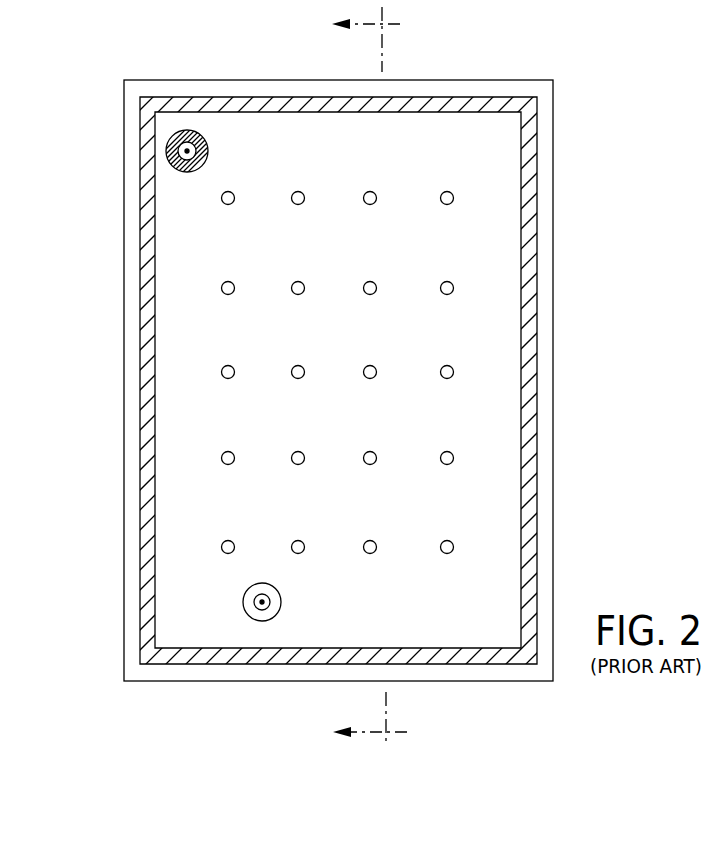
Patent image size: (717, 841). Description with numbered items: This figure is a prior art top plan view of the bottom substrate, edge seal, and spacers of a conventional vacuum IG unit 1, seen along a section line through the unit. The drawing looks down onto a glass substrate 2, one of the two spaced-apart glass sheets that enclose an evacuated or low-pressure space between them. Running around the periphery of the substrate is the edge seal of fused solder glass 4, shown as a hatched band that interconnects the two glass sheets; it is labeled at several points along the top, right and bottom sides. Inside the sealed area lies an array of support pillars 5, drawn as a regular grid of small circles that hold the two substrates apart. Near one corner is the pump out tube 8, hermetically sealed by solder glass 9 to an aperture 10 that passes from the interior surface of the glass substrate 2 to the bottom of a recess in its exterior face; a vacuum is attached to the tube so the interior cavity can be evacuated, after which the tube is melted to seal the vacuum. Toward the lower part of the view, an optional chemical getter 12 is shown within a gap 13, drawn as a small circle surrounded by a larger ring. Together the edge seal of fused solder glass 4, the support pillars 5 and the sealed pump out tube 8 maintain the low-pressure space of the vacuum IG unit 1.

The vacuum IG unit 1 is at (114, 568).
The glass substrate 2 is at (332, 87).
The edge seal of fused solder glass 4 is at (248, 103).
The support pillars 5 is at (454, 287).
The pump out tube 8 is at (170, 143).
The solder glass 9 is at (188, 175).
The aperture 10 is at (185, 152).
The chemical getter 12 is at (250, 614).
The gap 13 is at (275, 602).